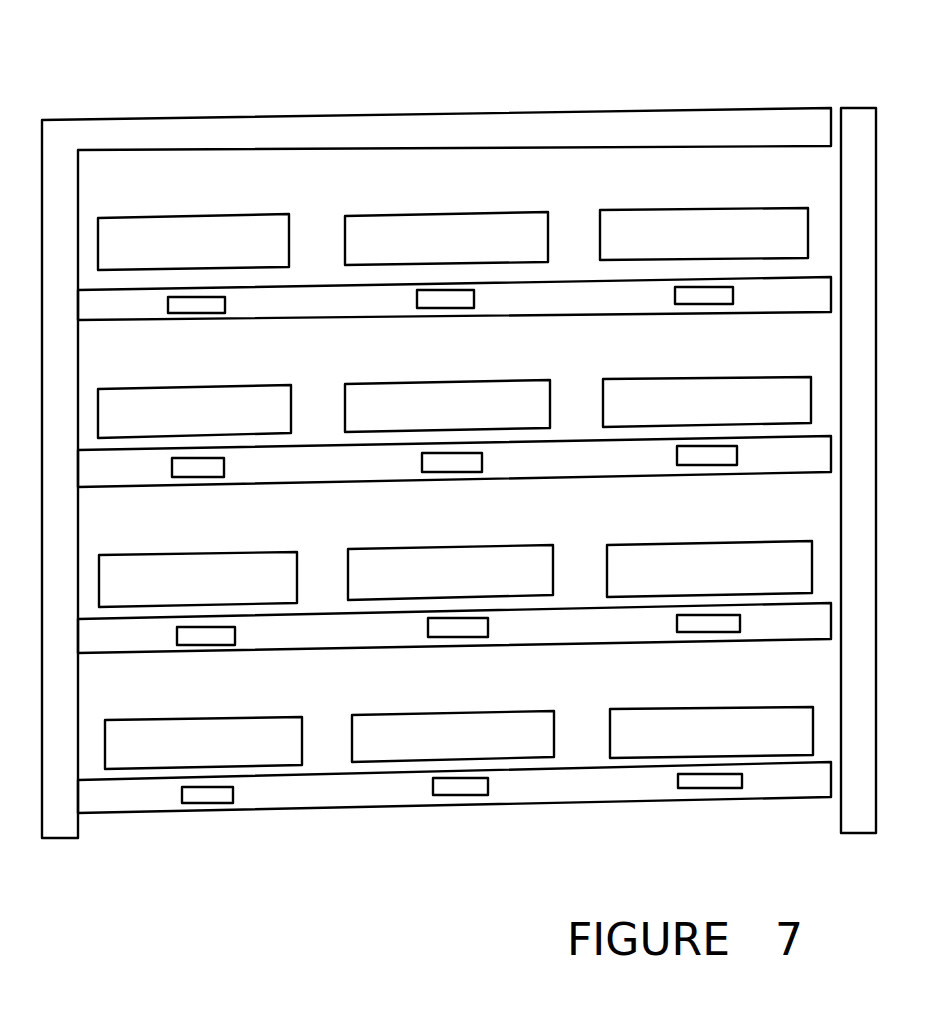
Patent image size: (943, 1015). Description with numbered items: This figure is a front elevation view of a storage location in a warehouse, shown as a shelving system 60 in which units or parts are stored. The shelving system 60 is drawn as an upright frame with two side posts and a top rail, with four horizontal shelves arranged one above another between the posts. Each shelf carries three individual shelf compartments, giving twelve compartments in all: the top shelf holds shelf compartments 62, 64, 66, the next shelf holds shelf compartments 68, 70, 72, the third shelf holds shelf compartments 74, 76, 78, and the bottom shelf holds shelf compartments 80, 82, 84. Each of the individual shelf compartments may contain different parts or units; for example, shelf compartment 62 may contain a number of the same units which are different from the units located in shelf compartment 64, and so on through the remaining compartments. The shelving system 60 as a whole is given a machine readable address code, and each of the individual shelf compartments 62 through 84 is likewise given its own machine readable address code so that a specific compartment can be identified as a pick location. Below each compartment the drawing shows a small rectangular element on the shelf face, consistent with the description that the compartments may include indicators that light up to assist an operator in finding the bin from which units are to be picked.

The shelving system 60 is at (758, 93).
The shelf compartment 62 is at (193, 242).
The shelf compartment 64 is at (446, 238).
The shelf compartment 66 is at (704, 234).
The shelf compartment 68 is at (194, 411).
The shelf compartment 70 is at (447, 406).
The shelf compartment 72 is at (707, 402).
The shelf compartment 74 is at (198, 579).
The shelf compartment 76 is at (450, 572).
The shelf compartment 78 is at (709, 569).
The shelf compartment 80 is at (203, 743).
The shelf compartment 82 is at (453, 736).
The shelf compartment 84 is at (711, 732).